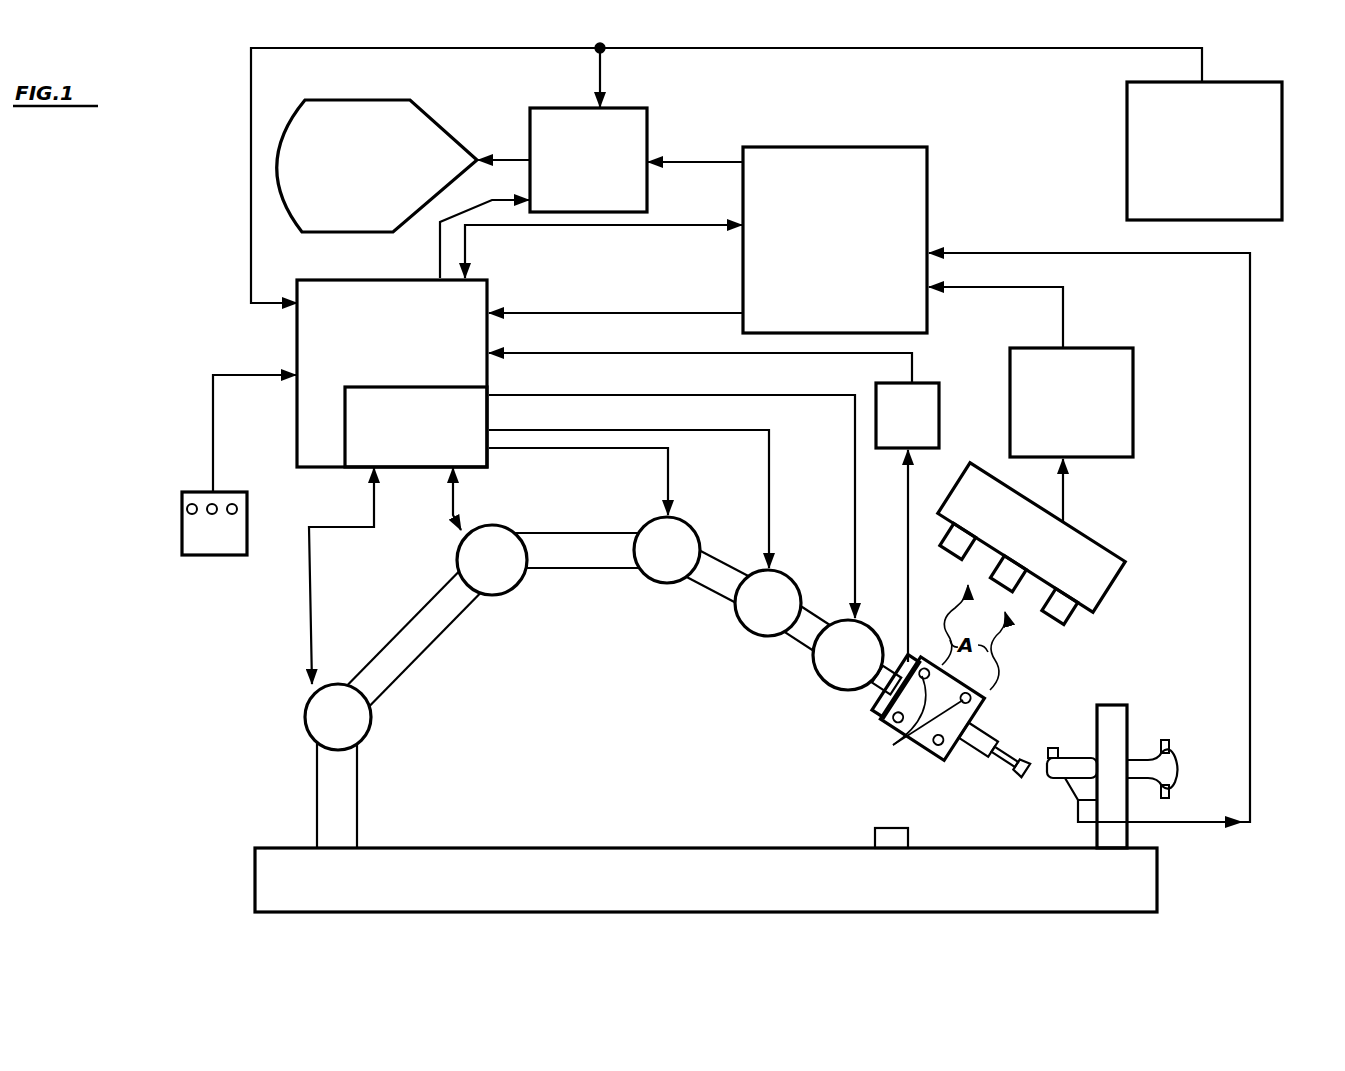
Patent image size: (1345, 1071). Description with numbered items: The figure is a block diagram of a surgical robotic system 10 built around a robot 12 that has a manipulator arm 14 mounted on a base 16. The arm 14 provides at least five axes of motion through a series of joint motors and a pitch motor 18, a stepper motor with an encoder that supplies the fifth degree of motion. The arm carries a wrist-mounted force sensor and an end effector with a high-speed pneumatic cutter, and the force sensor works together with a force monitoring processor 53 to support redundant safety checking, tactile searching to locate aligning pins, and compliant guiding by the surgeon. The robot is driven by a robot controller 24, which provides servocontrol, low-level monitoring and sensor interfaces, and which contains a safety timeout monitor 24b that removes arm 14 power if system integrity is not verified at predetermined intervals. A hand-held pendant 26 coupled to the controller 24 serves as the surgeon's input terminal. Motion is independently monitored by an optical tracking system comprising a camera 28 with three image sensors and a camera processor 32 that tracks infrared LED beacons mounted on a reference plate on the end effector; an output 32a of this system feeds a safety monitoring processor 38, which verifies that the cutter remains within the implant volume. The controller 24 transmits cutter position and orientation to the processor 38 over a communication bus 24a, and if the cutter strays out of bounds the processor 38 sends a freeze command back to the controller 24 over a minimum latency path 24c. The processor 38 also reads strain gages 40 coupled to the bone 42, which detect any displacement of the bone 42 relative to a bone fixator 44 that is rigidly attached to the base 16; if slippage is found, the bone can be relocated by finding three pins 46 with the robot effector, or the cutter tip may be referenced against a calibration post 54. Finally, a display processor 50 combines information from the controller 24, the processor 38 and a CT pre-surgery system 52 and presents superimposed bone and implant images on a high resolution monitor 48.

The surgical robotic system 10 is at (178, 212).
The robot 12 is at (580, 621).
The manipulator arm 14 is at (420, 662).
The base 16 is at (255, 887).
The pitch motor 18 is at (816, 682).
The robot controller 24 is at (490, 297).
The communication bus 24a is at (605, 227).
The safety timeout monitor 24b is at (433, 470).
The minimum latency path 24c is at (603, 313).
The hand-held pendant 26 is at (182, 520).
The camera 28 is at (1042, 548).
The camera processor 32 is at (1133, 366).
The output of the optical tracking system 32a is at (968, 289).
The safety monitoring processor 38 is at (928, 165).
The strain gages 40 is at (1070, 800).
The bone 42 is at (1133, 758).
The bone fixator 44 is at (1112, 705).
The pins 46 is at (1052, 748).
The high resolution monitor 48 is at (433, 113).
The display processor 50 is at (652, 113).
The CT pre-surgery system 52 is at (1283, 186).
The force monitoring processor 53 is at (940, 393).
The calibration pin or post 54 is at (875, 838).